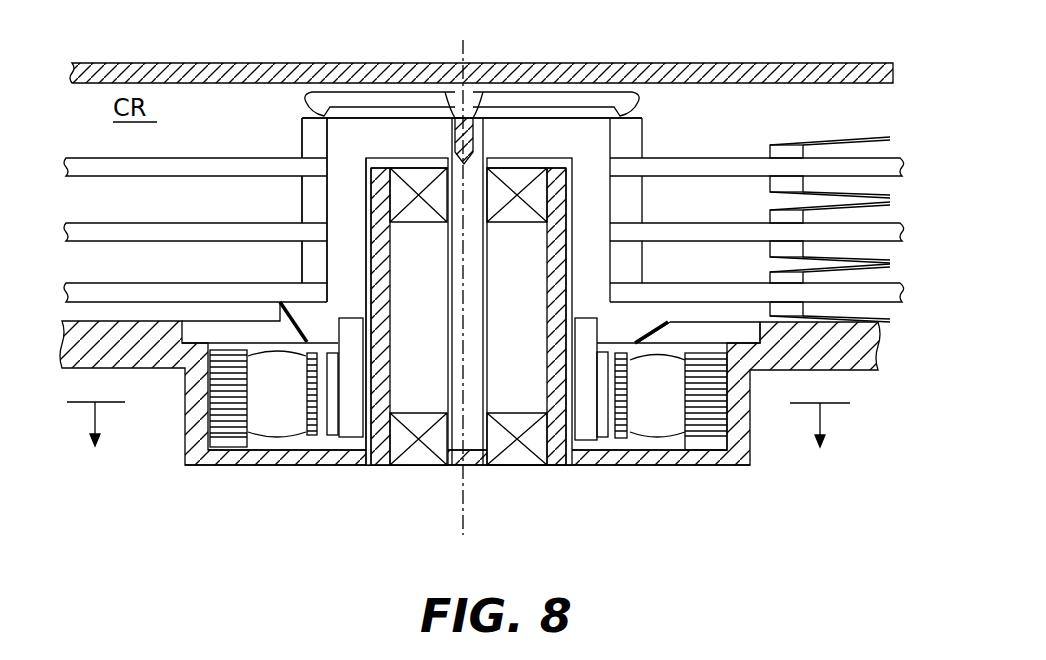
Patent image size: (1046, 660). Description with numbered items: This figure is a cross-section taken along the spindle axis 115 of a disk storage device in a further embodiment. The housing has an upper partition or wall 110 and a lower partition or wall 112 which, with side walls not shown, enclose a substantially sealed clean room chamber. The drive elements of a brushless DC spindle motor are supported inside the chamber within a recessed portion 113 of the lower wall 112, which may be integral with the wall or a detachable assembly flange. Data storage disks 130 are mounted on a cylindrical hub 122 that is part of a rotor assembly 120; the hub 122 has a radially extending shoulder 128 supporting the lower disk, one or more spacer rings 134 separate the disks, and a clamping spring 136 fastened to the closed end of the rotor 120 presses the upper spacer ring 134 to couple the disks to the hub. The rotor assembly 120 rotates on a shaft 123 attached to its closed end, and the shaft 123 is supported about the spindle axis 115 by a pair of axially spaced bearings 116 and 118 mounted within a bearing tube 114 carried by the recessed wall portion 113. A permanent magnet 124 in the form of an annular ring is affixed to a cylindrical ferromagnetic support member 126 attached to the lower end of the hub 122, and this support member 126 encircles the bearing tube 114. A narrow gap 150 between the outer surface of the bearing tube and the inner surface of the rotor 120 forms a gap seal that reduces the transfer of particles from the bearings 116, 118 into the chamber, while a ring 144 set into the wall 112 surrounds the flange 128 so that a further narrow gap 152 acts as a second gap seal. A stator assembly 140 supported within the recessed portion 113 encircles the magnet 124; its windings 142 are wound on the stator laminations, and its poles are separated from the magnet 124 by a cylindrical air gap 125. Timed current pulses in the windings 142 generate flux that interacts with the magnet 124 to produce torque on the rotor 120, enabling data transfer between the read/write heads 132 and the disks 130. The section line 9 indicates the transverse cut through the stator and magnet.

The upper partition or wall 110 is at (170, 63).
The lower partition or wall 112 is at (152, 368).
The recessed portion 113 is at (213, 458).
The bearing tube 114 is at (417, 252).
The spindle axis 115 is at (463, 522).
The bearing 116 is at (527, 467).
The bearing 118 is at (530, 222).
The rotor assembly 120 is at (653, 135).
The hub 122 is at (340, 136).
The shaft 123 is at (517, 160).
The permanent magnet 124 is at (333, 440).
The air gap 125 is at (612, 446).
The cylindrical ferromagnetic support member 126 is at (347, 440).
The radially extending shoulder 128 is at (300, 320).
The data storage disks 130 is at (748, 282).
The read/write heads 132 is at (791, 133).
The spacer ring 134 is at (298, 257).
The clamping spring 136 is at (360, 97).
The stator assembly 140 is at (677, 438).
The windings 142 is at (650, 412).
The ring 144 is at (705, 330).
The narrow gap 150 is at (366, 297).
The narrow gap 152 is at (282, 325).
The section line 9- 9 is at (458, 419).